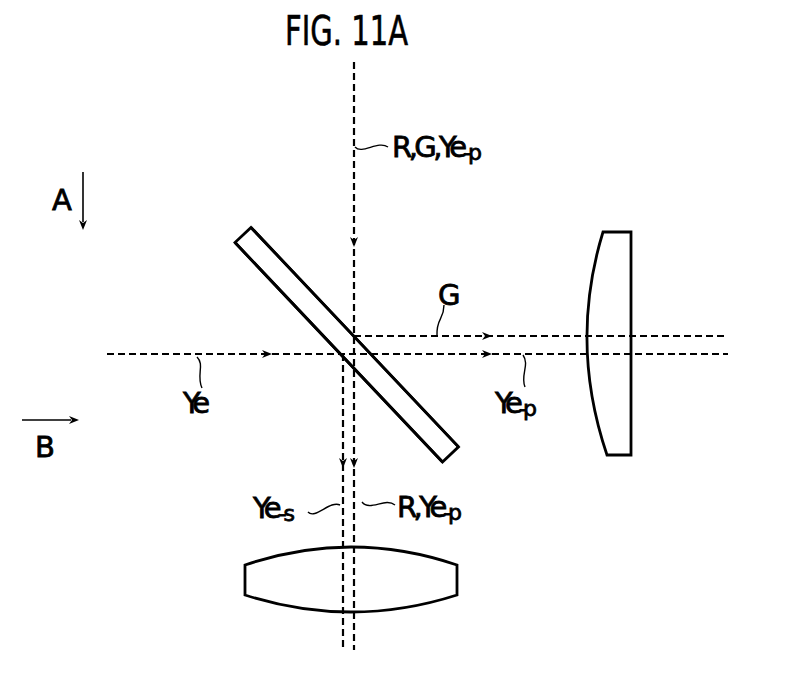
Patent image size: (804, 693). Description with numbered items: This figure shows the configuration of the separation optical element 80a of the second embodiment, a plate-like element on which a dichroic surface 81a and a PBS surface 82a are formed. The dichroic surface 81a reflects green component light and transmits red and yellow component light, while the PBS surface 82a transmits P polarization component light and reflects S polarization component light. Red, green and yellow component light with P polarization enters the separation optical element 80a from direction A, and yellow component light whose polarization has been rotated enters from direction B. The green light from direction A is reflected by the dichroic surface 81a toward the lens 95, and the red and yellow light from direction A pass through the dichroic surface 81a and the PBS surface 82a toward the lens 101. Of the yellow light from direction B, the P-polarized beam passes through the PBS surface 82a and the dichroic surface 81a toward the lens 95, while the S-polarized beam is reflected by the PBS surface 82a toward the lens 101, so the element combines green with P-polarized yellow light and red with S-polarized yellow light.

The separation optical element 80a is at (250, 229).
The dichroic surface 81a is at (268, 240).
The PBS surface 82a is at (257, 267).
The lens 95 is at (619, 253).
The lens 101 is at (445, 580).